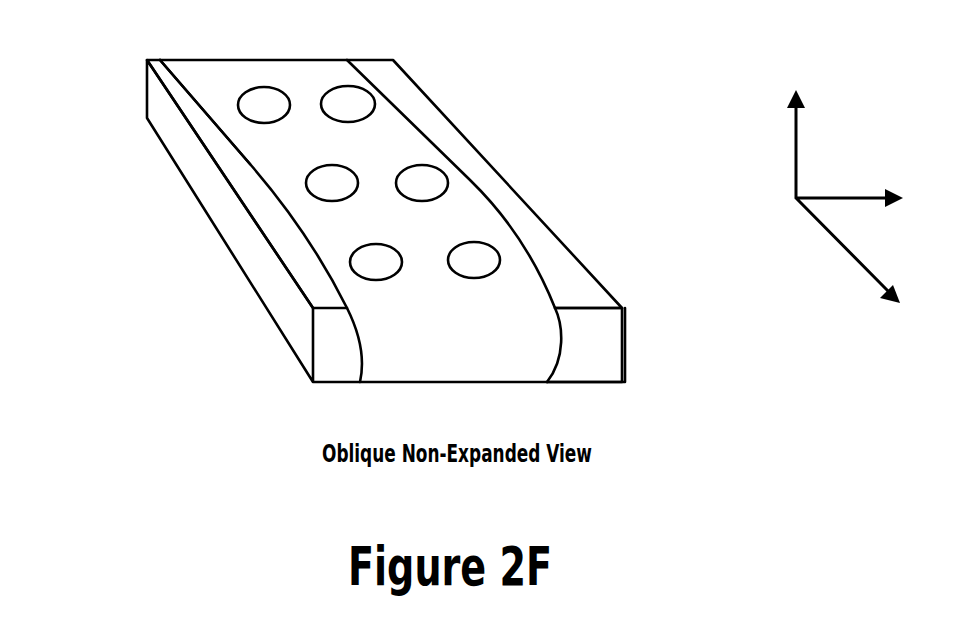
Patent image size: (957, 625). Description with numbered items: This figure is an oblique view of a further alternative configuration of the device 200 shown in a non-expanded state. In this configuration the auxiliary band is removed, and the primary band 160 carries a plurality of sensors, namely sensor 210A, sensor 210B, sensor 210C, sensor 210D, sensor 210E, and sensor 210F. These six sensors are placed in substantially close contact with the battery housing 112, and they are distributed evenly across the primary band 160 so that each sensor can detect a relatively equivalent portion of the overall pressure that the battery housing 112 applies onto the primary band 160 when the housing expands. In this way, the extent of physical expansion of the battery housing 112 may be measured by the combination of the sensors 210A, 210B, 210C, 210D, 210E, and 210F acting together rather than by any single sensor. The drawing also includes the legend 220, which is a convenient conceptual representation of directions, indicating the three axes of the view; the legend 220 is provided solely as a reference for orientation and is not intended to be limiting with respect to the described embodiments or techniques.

The device 200 is at (610, 128).
The primary band 160 is at (197, 63).
The battery housing 112 is at (625, 332).
The sensor 210A is at (272, 87).
The sensor 210B is at (335, 86).
The sensor 210C is at (325, 165).
The sensor 210D is at (418, 165).
The sensor 210E is at (375, 244).
The sensor 210F is at (475, 242).
The legend 220 is at (857, 149).